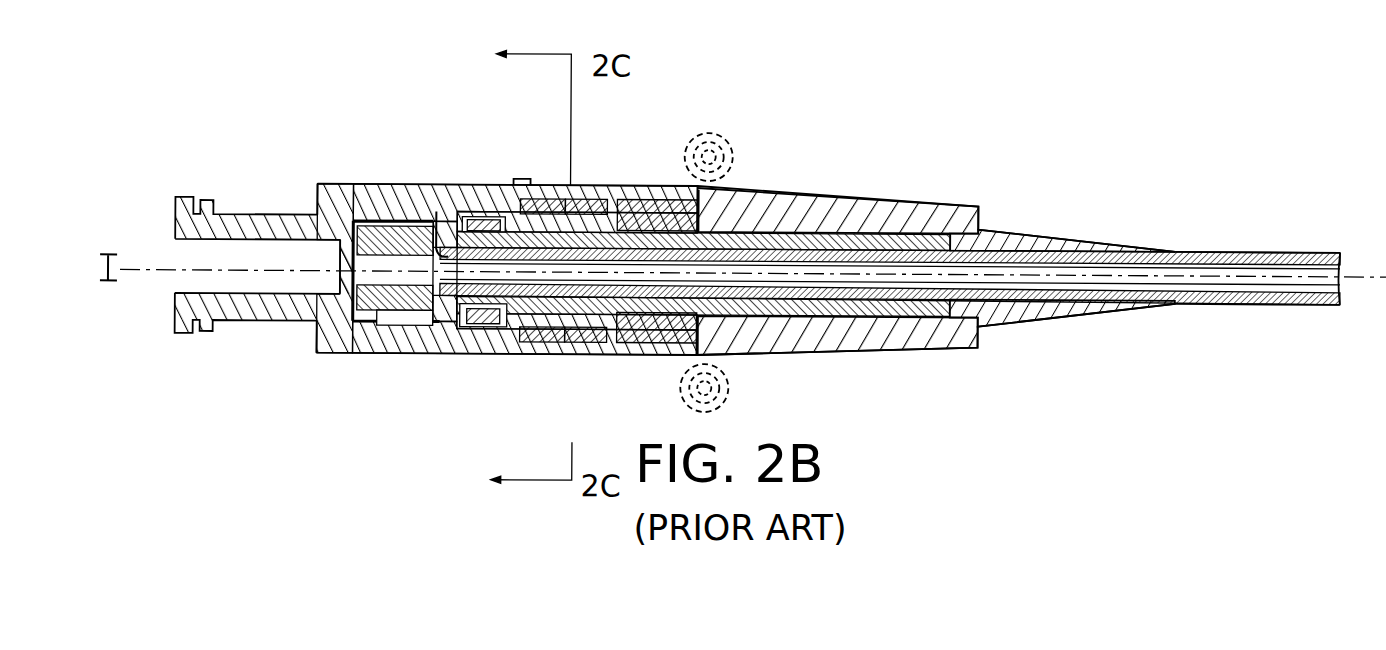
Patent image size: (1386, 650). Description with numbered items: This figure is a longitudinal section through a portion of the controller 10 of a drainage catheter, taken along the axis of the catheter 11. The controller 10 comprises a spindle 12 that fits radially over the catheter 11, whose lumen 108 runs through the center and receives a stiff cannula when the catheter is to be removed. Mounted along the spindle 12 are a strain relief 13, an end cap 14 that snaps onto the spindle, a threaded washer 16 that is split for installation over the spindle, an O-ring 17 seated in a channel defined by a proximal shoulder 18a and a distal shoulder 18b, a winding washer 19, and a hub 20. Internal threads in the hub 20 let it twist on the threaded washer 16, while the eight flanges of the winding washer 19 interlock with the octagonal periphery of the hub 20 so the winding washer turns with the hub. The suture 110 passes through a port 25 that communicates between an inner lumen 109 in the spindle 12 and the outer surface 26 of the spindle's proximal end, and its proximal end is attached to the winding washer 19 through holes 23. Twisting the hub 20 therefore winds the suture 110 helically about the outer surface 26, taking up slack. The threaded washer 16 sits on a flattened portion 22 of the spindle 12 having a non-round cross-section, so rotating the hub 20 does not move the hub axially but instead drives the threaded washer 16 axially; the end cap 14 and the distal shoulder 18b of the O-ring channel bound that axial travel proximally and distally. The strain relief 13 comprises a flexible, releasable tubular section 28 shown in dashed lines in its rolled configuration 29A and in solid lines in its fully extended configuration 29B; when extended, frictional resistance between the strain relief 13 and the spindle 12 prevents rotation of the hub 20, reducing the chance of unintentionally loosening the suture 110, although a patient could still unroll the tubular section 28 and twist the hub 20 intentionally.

The controller 10 is at (458, 118).
The catheter 11 is at (1246, 303).
The spindle 12 is at (866, 318).
The strain relief 13 is at (872, 205).
The end cap 14 is at (688, 200).
The threaded washer 16 is at (584, 186).
The O-ring 17 is at (448, 185).
The proximal shoulder 18a is at (462, 340).
The distal shoulder 18b is at (485, 340).
The winding washer 19 is at (488, 186).
The hub 20 is at (220, 325).
The flattened portion 22 is at (320, 171).
The holes 23 is at (357, 186).
The port 25 is at (444, 340).
The outer surface 26 is at (397, 228).
The tubular section 28 is at (565, 360).
The rolled configuration 29A is at (712, 122).
The fully extended configuration 29B is at (593, 360).
The lumen 108 is at (1218, 268).
The inner lumen 109 is at (330, 318).
The suture 110 is at (1215, 298).